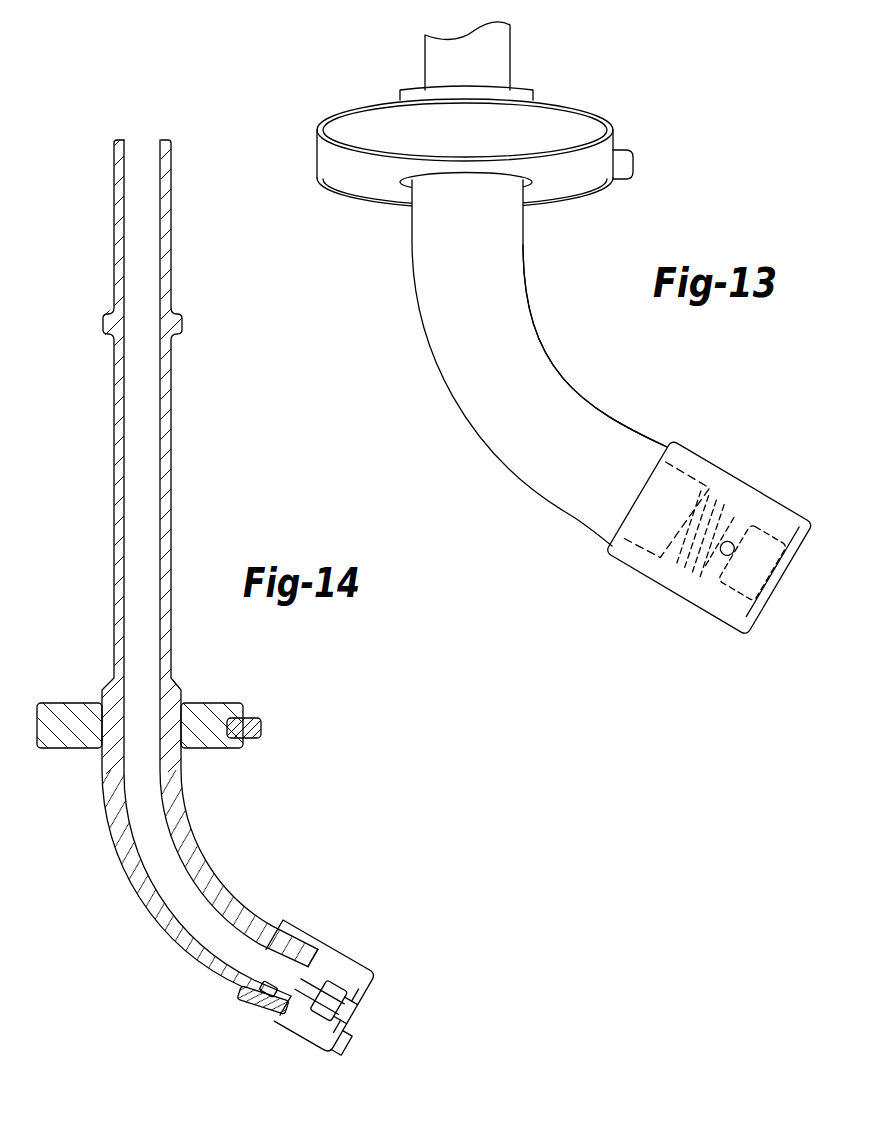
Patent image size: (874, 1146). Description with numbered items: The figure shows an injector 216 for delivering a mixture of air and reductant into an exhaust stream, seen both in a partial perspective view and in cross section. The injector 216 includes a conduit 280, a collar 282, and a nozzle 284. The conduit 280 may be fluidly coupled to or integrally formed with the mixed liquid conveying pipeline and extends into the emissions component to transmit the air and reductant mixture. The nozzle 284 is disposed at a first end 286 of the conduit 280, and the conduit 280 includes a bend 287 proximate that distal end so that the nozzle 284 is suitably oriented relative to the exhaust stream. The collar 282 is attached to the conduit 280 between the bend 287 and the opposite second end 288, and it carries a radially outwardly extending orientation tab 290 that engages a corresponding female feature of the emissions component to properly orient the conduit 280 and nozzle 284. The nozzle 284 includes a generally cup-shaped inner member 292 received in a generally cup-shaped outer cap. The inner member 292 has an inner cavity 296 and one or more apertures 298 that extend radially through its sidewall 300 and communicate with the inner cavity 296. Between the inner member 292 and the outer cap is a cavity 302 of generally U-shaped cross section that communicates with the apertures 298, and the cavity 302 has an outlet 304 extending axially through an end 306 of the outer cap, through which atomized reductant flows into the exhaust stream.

In FIG. 13, the injector 216 is at (643, 400).
In FIG. 14, the injector 216 is at (88, 473).
In FIG. 13, the conduit 280 is at (450, 378).
In FIG. 14, the conduit 280 is at (172, 428).
In FIG. 13, the collar 282 is at (585, 120).
In FIG. 14, the collar 282 is at (64, 703).
In FIG. 13, the nozzle 284 is at (626, 582).
In FIG. 14, the nozzle 284 is at (316, 918).
In FIG. 14, the first end 286 is at (270, 985).
In FIG. 13, the bend 287 is at (540, 362).
In FIG. 14, the bend 287 is at (162, 923).
In FIG. 14, the second end 288 is at (114, 158).
In FIG. 13, the orientation tab 290 is at (630, 163).
In FIG. 14, the orientation tab 290 is at (262, 728).
In FIG. 13, the inner member 292 is at (742, 515).
In FIG. 14, the inner member 292 is at (308, 1030).
In FIG. 14, the inner cavity 296 is at (314, 993).
In FIG. 13, the apertures 298 is at (745, 520).
In FIG. 13, the sidewall 300 is at (748, 535).
In FIG. 14, the sidewall 300 is at (335, 993).
In FIG. 14, the cavity 302 is at (352, 1000).
In FIG. 14, the outlet 304 is at (355, 1008).
In FIG. 13, the end 306 is at (768, 607).
In FIG. 14, the end 306 is at (345, 1050).